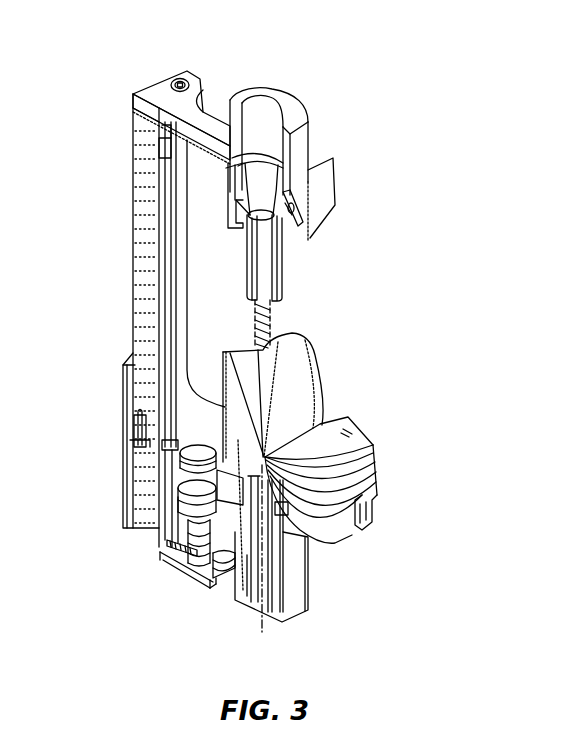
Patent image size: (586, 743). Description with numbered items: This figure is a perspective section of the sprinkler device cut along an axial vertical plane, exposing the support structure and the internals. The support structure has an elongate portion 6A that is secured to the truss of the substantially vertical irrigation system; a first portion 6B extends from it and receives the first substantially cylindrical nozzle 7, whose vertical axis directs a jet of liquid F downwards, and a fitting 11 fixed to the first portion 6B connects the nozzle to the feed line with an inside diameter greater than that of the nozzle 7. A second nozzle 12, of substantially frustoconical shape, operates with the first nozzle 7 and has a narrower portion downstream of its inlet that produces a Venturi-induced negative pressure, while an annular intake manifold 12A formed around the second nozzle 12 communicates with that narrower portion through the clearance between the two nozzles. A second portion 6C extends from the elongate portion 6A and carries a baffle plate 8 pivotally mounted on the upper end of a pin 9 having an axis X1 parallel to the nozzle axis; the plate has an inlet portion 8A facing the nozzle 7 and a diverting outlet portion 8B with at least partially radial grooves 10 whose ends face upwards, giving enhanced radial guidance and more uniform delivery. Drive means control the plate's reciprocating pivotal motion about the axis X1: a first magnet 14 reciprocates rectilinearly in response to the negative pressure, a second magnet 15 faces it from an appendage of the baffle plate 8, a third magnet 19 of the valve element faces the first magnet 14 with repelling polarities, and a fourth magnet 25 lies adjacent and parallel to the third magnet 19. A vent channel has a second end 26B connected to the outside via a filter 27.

The elongate portion 6A is at (147, 237).
The first portion 6B is at (207, 120).
The second portion 6C is at (193, 567).
The first nozzle 7 is at (280, 283).
The baffle plate 8 is at (350, 433).
The inlet portion 8A is at (293, 361).
The diverting outlet portion 8B is at (367, 458).
The pin 9 is at (268, 565).
The radial grooves 10 is at (373, 512).
The fitting 11 is at (305, 143).
The second nozzle 12 is at (297, 208).
The annular intake manifold 12A is at (232, 188).
The first magnet 14 is at (203, 500).
The second magnet 15 is at (197, 460).
The third magnet 19 is at (170, 545).
The fourth magnet 25 is at (227, 580).
The second end 26B is at (122, 405).
The filter 27 is at (140, 423).
The jet of liquid F is at (267, 322).
The pin axis X1 is at (268, 633).